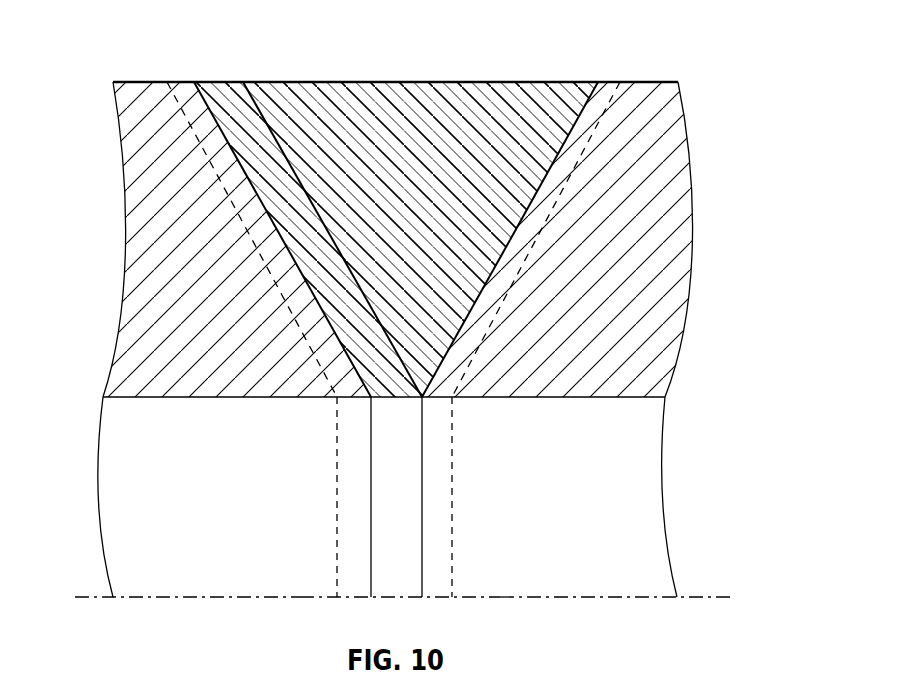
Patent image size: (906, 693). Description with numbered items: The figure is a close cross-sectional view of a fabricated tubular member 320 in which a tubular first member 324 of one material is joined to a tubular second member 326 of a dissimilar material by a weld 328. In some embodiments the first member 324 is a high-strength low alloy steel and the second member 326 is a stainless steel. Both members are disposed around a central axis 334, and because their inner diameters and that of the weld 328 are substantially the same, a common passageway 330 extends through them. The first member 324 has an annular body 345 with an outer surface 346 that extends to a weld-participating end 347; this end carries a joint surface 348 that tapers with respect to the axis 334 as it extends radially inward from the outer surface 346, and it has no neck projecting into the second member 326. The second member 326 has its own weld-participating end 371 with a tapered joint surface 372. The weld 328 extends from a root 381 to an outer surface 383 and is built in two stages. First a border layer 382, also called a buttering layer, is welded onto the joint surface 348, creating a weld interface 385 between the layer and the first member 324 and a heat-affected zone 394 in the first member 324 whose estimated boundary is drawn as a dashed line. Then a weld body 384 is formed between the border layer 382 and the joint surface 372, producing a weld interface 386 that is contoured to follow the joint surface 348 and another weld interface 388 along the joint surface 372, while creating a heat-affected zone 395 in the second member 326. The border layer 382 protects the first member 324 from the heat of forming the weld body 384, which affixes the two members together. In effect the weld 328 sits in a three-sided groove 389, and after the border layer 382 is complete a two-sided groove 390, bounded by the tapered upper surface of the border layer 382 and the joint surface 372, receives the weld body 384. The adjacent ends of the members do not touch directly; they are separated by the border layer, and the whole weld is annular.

The fabricated tubular member 320 is at (133, 145).
The tubular first member 324 is at (138, 243).
The tubular second member 326 is at (667, 388).
The weld 328 is at (397, 105).
The passageway 330 is at (123, 511).
The central axis 334 is at (100, 596).
The annular body 345 is at (133, 275).
The outer surface 346 is at (134, 78).
The weld-participating end 347 is at (125, 417).
The joint surface 348 is at (208, 96).
The weld-participating end 371 is at (508, 590).
The tapered joint surface 372 is at (572, 106).
The root 381 is at (360, 399).
The border layer 382 is at (310, 283).
The outer surface 383 is at (517, 78).
The weld body 384 is at (478, 105).
The weld interface 385 is at (328, 325).
The weld interface 386 is at (259, 110).
The weld interface 388 is at (497, 258).
The three-sided groove 389 is at (465, 318).
The two-sided groove 390 is at (475, 302).
The heat-affected zone 394 is at (224, 194).
The heat-affected zone 395 is at (560, 193).